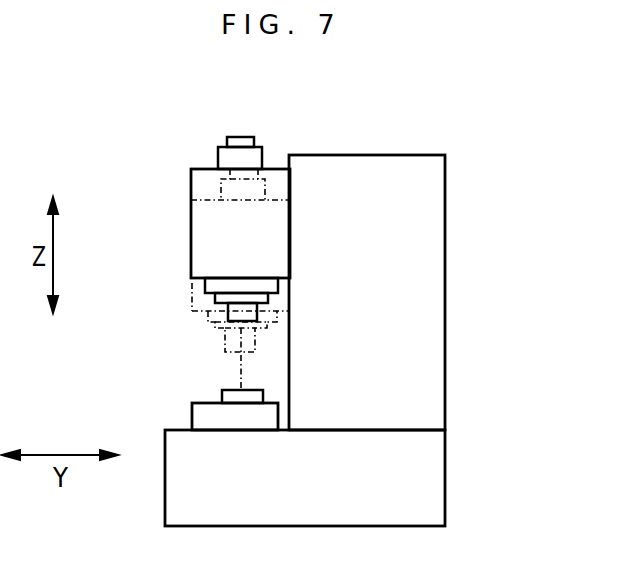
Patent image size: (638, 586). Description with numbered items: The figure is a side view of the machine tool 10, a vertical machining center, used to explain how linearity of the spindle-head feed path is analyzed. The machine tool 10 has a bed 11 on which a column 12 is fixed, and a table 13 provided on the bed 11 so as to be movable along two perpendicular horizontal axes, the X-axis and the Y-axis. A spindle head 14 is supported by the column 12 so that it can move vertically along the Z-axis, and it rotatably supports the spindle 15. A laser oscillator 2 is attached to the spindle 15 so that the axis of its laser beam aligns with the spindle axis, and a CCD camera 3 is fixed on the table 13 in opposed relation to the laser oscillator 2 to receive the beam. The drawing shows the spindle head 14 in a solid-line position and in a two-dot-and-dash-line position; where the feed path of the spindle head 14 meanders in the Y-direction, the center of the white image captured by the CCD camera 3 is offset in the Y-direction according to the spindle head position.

The machine tool 10 is at (160, 156).
The bed 11 is at (445, 476).
The column 12 is at (368, 158).
The table 13 is at (192, 413).
The spindle head 14 is at (191, 229).
The spindle 15 is at (208, 287).
The laser oscillator 2 is at (208, 314).
The CCD camera 3 is at (220, 395).